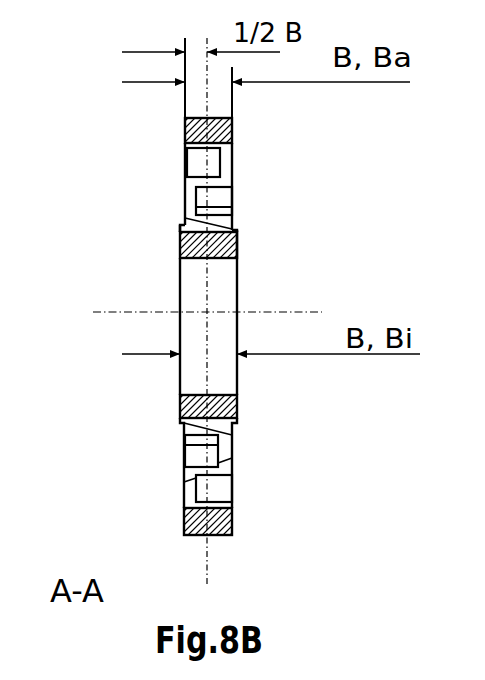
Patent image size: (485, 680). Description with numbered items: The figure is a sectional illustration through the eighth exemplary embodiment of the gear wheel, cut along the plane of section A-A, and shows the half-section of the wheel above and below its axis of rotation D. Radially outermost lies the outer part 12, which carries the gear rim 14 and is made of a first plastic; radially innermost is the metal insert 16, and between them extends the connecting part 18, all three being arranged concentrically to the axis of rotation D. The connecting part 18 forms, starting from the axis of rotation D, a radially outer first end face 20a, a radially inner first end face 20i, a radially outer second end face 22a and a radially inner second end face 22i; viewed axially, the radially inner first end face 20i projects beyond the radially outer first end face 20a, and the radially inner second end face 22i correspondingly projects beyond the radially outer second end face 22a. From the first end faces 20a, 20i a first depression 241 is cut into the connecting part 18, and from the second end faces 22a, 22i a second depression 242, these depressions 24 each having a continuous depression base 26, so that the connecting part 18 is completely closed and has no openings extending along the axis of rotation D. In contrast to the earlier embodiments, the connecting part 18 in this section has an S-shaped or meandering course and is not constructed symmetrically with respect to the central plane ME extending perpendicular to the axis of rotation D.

The outer part 12 is at (293, 117).
The gear rim 14 is at (232, 124).
The insert 16 is at (237, 257).
The connecting part 18 is at (197, 182).
The radially outer first end face 20a is at (185, 132).
The radially inner first end face 20i is at (178, 234).
The radially outer second end face 22a is at (232, 133).
The radially inner second end face 22i is at (238, 237).
The depressions 24 is at (151, 158).
The first depression 241 is at (187, 151).
The second depression 242 is at (217, 202).
The depression base 26 is at (185, 183).
The central plane ME is at (210, 370).
The axis of rotation D is at (122, 312).